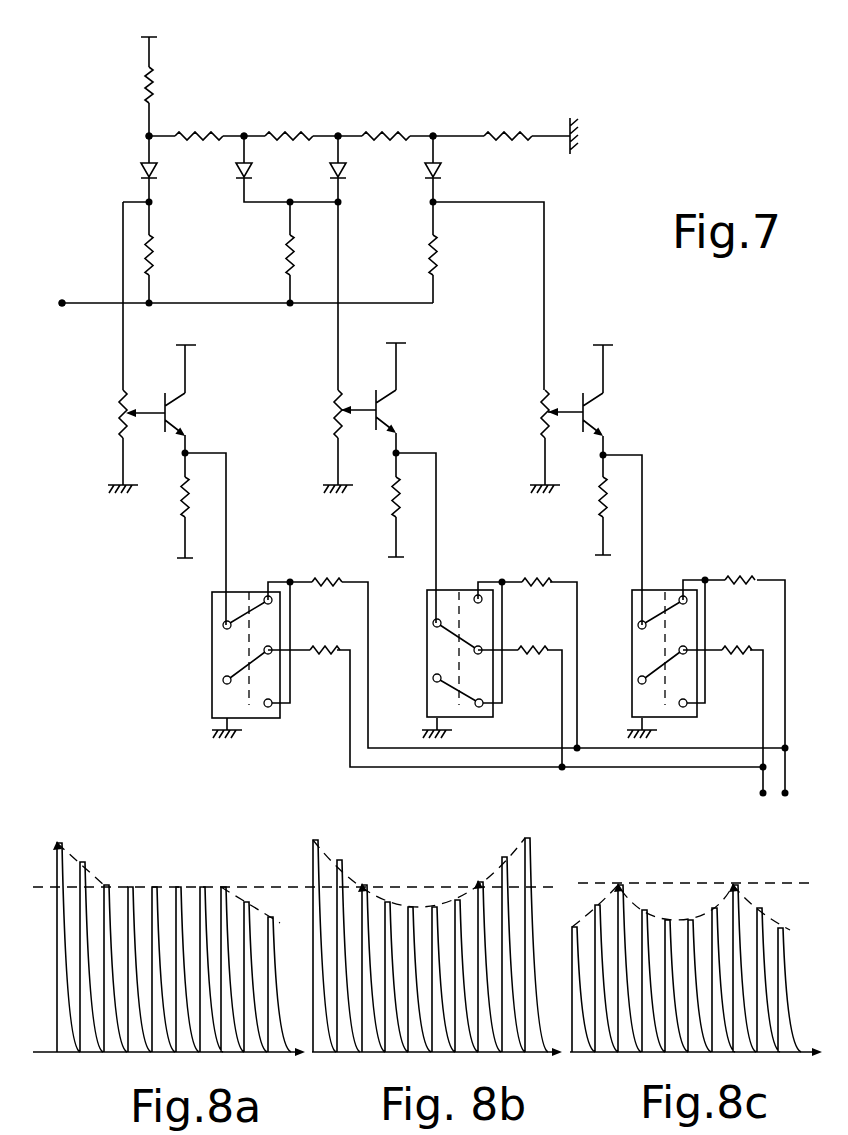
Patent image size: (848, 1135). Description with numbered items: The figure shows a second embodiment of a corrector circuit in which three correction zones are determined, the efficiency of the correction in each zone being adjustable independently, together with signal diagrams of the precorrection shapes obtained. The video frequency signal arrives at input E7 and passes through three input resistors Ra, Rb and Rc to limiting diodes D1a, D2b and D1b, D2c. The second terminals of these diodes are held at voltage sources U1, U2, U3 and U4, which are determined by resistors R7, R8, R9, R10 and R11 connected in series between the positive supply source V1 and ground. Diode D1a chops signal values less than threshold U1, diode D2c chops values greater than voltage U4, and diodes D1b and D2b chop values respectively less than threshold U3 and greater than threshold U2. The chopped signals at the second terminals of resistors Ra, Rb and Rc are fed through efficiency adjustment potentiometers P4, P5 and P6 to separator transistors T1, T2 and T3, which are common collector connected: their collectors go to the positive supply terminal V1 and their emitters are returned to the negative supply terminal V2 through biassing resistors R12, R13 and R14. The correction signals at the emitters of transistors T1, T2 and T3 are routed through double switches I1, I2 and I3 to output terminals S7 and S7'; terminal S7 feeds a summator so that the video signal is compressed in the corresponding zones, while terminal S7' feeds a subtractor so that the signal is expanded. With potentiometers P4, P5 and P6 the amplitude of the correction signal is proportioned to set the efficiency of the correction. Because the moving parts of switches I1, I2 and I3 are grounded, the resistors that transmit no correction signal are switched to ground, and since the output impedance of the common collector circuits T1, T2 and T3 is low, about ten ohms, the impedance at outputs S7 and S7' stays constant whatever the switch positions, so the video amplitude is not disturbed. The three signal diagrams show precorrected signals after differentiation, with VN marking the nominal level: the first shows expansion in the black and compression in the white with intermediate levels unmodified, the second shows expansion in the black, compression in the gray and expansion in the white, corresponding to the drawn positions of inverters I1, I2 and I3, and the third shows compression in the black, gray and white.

In FIG. 7, the resistor R7 is at (145, 92).
In FIG. 7, the resistor R8 is at (199, 119).
In FIG. 7, the resistor R9 is at (289, 119).
In FIG. 7, the resistor R10 is at (386, 119).
In FIG. 7, the resistor R11 is at (508, 118).
In FIG. 7, the voltage source U1 is at (150, 134).
In FIG. 7, the voltage source U2 is at (245, 134).
In FIG. 7, the voltage source U3 is at (339, 134).
In FIG. 7, the voltage source U4 is at (434, 134).
In FIG. 7, the limiting diode D1a is at (158, 180).
In FIG. 7, the limiting diode D2b is at (252, 170).
In FIG. 7, the limiting diode D1b is at (346, 170).
In FIG. 7, the limiting diode D2c is at (441, 170).
In FIG. 7, the input resistor Ra is at (157, 255).
In FIG. 7, the input resistor Rb is at (284, 255).
In FIG. 7, the input resistor Rc is at (441, 258).
In FIG. 7, the input of correction circuit E7 is at (62, 306).
In FIG. 7, the efficiency adjustment potentiometer P4 is at (119, 406).
In FIG. 7, the efficiency adjustment potentiometer P5 is at (334, 405).
In FIG. 7, the efficiency adjustment potentiometer P6 is at (540, 405).
In FIG. 7, the separator transistor T1 is at (190, 397).
In FIG. 7, the separator transistor T2 is at (398, 396).
In FIG. 7, the separator transistor T3 is at (610, 395).
In FIG. 7, the biassing resistor R12 is at (182, 498).
In FIG. 7, the biassing resistor R13 is at (392, 498).
In FIG. 7, the biassing resistor R14 is at (600, 500).
In FIG. 7, the double switch I1 is at (212, 690).
In FIG. 7, the double switch I2 is at (427, 688).
In FIG. 7, the double switch I3 is at (632, 688).
In FIG. 7, the output terminal S7 is at (744, 808).
In FIG. 7, the output terminal S7' is at (782, 813).
In FIG. 7, the positive supply source V1 is at (402, 193).
In FIG. 7, the negative supply terminal V2 is at (385, 573).
In FIG. 8A, the nominal level VN is at (167, 876).